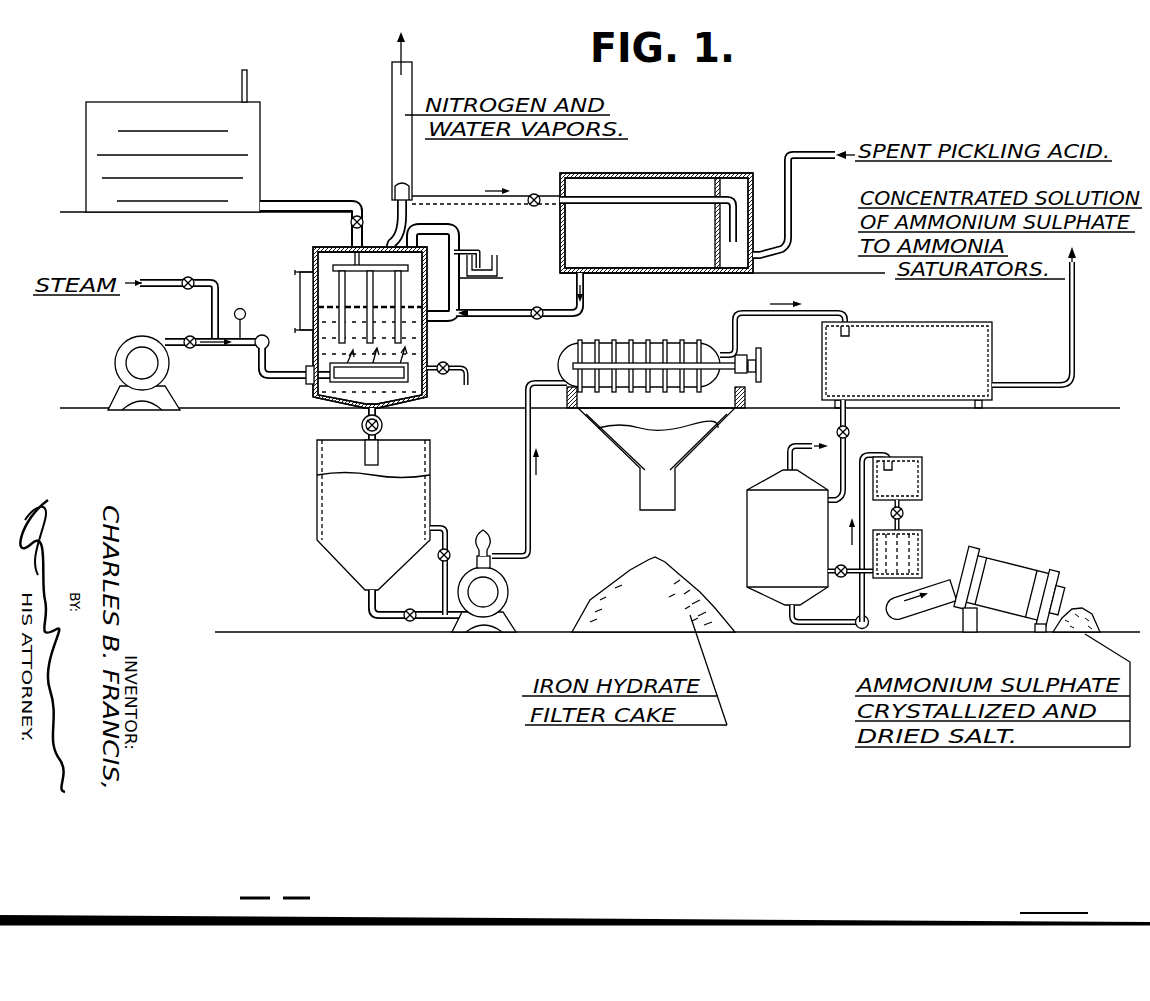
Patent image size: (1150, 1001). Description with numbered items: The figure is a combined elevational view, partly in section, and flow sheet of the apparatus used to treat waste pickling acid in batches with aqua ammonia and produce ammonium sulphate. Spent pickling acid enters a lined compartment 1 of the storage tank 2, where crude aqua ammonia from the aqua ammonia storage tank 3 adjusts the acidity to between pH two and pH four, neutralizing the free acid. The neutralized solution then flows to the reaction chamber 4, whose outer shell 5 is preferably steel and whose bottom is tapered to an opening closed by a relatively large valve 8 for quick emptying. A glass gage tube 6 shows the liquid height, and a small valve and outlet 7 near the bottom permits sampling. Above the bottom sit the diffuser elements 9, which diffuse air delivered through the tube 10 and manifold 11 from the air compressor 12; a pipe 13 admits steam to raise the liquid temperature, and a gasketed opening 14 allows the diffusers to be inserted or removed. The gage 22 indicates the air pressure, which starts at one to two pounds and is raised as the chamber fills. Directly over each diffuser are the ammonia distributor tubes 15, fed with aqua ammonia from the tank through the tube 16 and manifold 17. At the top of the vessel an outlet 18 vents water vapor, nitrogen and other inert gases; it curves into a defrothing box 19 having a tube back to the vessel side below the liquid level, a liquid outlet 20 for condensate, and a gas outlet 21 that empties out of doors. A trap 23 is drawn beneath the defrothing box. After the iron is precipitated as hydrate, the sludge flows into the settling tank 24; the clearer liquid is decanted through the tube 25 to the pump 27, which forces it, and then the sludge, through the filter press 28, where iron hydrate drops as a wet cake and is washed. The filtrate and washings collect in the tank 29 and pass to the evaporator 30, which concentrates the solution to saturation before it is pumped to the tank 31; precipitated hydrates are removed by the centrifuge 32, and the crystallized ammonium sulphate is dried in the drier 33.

The compartment 1 is at (742, 180).
The storage tank 2 is at (650, 234).
The aqua ammonia storage tank 3 is at (195, 102).
The reaction chamber 4 is at (312, 250).
The outer shell 5 is at (313, 263).
The glass gage tube 6 is at (300, 295).
The valve and outlet 7 is at (455, 366).
The valve 8 is at (383, 425).
The diffuser element 9 is at (352, 372).
The tube 10 is at (260, 378).
The manifold 11 is at (266, 335).
The air compressor 12 is at (122, 358).
The steam inlet pipe 13 is at (158, 278).
The gasketed opening 14 is at (310, 368).
The ammonia distributor tube 15 is at (375, 302).
The tube 16 is at (298, 198).
The manifold 17 is at (348, 264).
The outlet 18 is at (388, 228).
The defrothing box 19 is at (458, 222).
The liquid outlet 20 is at (478, 248).
The gas outlet 21 is at (393, 90).
The gage 22 is at (240, 306).
The trap 23 is at (494, 264).
The settling tank 24 is at (330, 498).
The tube 25 is at (445, 525).
The pump 27 is at (496, 592).
The filter press 28 is at (638, 346).
The tank 29 is at (889, 330).
The evaporator 30 is at (798, 552).
The tank 31 is at (925, 468).
The centrifuge 32 is at (918, 546).
The drier 33 is at (1003, 575).